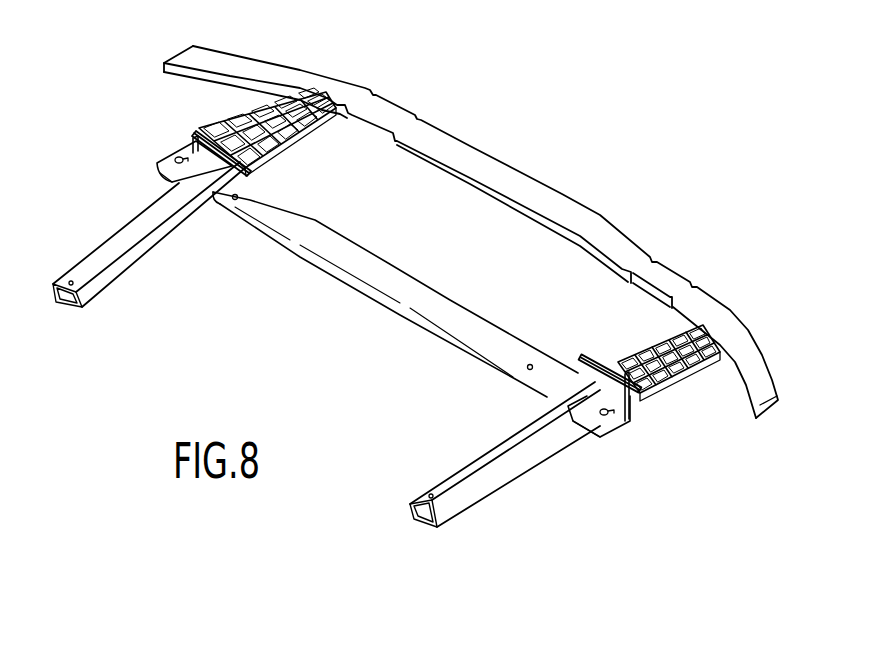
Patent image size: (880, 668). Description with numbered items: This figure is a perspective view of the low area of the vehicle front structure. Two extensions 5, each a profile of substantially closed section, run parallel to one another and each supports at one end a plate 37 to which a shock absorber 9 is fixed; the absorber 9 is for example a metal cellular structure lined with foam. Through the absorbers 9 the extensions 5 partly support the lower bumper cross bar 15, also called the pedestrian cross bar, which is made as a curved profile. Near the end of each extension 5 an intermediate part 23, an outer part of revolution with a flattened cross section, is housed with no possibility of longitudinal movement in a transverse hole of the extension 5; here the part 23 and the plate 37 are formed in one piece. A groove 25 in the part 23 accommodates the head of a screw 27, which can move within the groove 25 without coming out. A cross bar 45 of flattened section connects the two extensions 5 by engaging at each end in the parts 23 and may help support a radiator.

The extension 5 is at (112, 281).
The shock absorber 9 is at (279, 147).
The lower bumper cross bar 15 is at (562, 190).
The intermediate part 23 is at (187, 147).
The groove 25 is at (613, 415).
The screw 27 is at (187, 183).
The plate 37 is at (250, 173).
The cross bar 45 is at (390, 265).